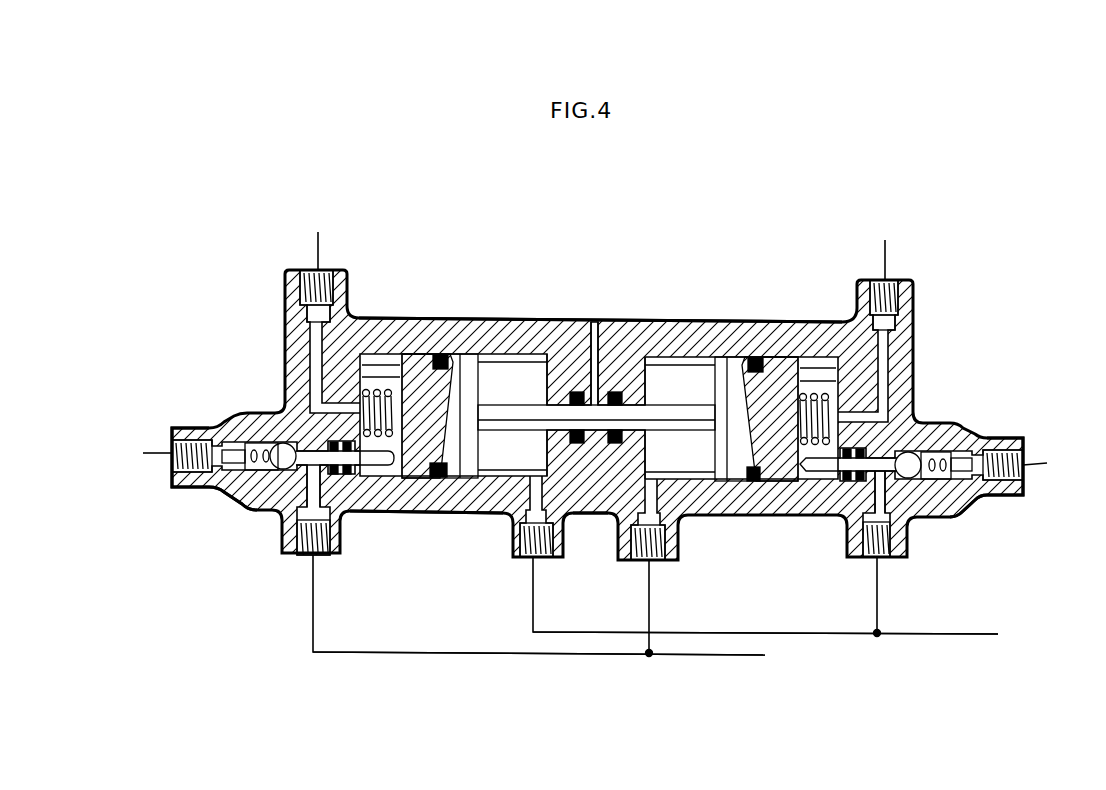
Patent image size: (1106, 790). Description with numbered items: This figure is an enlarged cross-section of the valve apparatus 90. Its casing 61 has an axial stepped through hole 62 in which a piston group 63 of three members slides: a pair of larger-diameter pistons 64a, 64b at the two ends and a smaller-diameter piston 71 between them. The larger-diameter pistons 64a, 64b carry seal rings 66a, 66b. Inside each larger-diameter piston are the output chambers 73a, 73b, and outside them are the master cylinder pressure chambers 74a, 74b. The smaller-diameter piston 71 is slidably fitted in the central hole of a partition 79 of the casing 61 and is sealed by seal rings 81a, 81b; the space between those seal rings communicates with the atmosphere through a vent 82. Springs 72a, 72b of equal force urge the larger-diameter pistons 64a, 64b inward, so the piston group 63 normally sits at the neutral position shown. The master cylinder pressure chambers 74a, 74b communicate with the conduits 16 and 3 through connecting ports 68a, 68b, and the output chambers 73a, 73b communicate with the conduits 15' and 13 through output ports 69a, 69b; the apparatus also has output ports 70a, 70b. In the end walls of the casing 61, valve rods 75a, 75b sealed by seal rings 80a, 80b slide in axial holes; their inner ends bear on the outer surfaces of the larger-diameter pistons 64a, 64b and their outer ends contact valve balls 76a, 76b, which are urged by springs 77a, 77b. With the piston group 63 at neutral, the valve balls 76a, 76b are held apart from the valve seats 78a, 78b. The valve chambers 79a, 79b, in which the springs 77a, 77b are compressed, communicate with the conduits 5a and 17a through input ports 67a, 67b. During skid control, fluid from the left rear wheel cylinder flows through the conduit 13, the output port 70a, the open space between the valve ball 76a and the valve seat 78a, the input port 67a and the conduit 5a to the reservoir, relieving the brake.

The conduit 3 is at (885, 262).
The conduit 5a is at (157, 424).
The conduit 13 is at (712, 657).
The conduit 15' is at (765, 657).
The conduit 16 is at (320, 253).
The conduit 17a is at (1038, 462).
The casing 61 is at (490, 338).
The axial through hole 62 is at (503, 476).
The piston group 63 is at (625, 410).
The larger-diameter piston 64a is at (445, 478).
The larger-diameter piston 64b is at (740, 482).
The seal ring 66a is at (438, 356).
The seal ring 66b is at (755, 358).
The input port 67a is at (143, 453).
The input port 67b is at (1037, 461).
The connecting port 68a is at (314, 279).
The connecting port 68b is at (888, 292).
The output port 69a is at (533, 558).
The output port 69b is at (648, 562).
The output port 70a is at (313, 548).
The output port 70b is at (880, 565).
The smaller-diameter piston 71 is at (553, 408).
The spring 72a is at (388, 390).
The spring 72b is at (813, 393).
The output chamber 73a is at (530, 463).
The output chamber 73b is at (698, 463).
The master cylinder pressure chamber 74a is at (377, 367).
The master cylinder pressure chamber 74b is at (826, 373).
The valve rod 75a is at (352, 465).
The valve rod 75b is at (813, 471).
The valve ball 76a is at (285, 473).
The valve ball 76b is at (903, 480).
The spring 77a is at (216, 498).
The spring 77b is at (940, 478).
The valve seat 78a is at (284, 443).
The valve seat 78b is at (912, 452).
The partition 79 is at (590, 500).
The valve chamber 79a is at (250, 443).
The valve chamber 79b is at (928, 453).
The seal ring 80a is at (343, 474).
The seal ring 80b is at (852, 481).
The seal ring 81a is at (579, 392).
The seal ring 81b is at (614, 396).
The vent 82 is at (595, 322).
The valve apparatus 90 is at (690, 318).